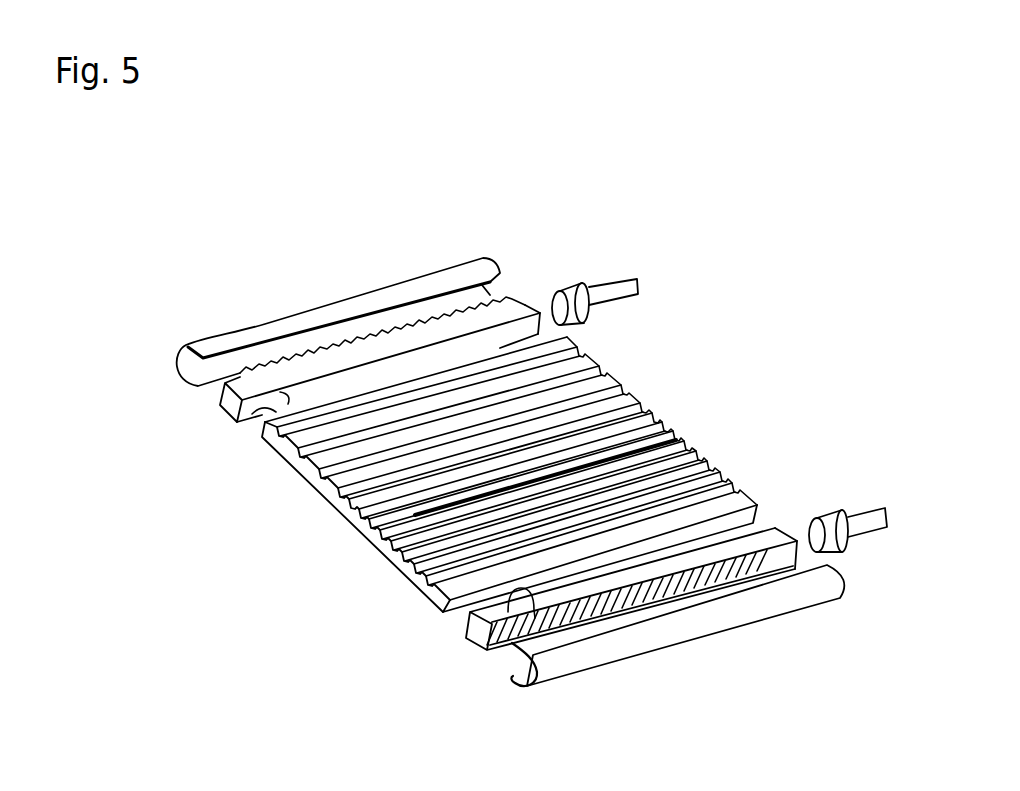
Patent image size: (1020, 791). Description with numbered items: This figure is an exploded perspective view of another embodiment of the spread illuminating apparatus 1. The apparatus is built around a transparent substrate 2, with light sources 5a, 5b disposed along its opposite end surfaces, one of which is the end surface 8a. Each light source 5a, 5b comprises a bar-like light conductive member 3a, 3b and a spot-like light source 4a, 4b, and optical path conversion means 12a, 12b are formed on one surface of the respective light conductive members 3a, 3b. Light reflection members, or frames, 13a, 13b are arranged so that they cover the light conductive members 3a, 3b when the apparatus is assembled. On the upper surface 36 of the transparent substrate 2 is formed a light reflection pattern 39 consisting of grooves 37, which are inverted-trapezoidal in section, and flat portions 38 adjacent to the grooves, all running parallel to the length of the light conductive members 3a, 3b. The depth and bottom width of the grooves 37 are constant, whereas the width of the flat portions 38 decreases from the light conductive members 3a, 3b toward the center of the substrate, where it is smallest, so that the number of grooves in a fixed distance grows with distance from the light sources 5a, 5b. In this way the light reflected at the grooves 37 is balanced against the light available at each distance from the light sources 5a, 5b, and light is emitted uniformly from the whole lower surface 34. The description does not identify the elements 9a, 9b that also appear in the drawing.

The spread illuminating apparatus 1 is at (505, 229).
The transparent substrate 2 is at (365, 535).
The light conductive member 3a is at (526, 304).
The light conductive member 3b is at (783, 537).
The spot-like light source 4a is at (584, 293).
The spot-like light source 4b is at (848, 510).
The light source 5a is at (695, 180).
The light source 5b is at (933, 422).
The end surface 8a is at (251, 420).
The upper hook 9a is at (286, 400).
The lower hook 9b is at (515, 648).
The optical path conversion means 12a is at (372, 335).
The optical path conversion means 12b is at (607, 612).
The light reflection member 13a is at (326, 318).
The light reflection member 13b is at (762, 603).
The lower surface 34 is at (421, 594).
The upper surface 36 is at (740, 497).
The grooves 37 is at (608, 384).
The flat portions 38 is at (622, 390).
The light reflection pattern 39 is at (812, 308).